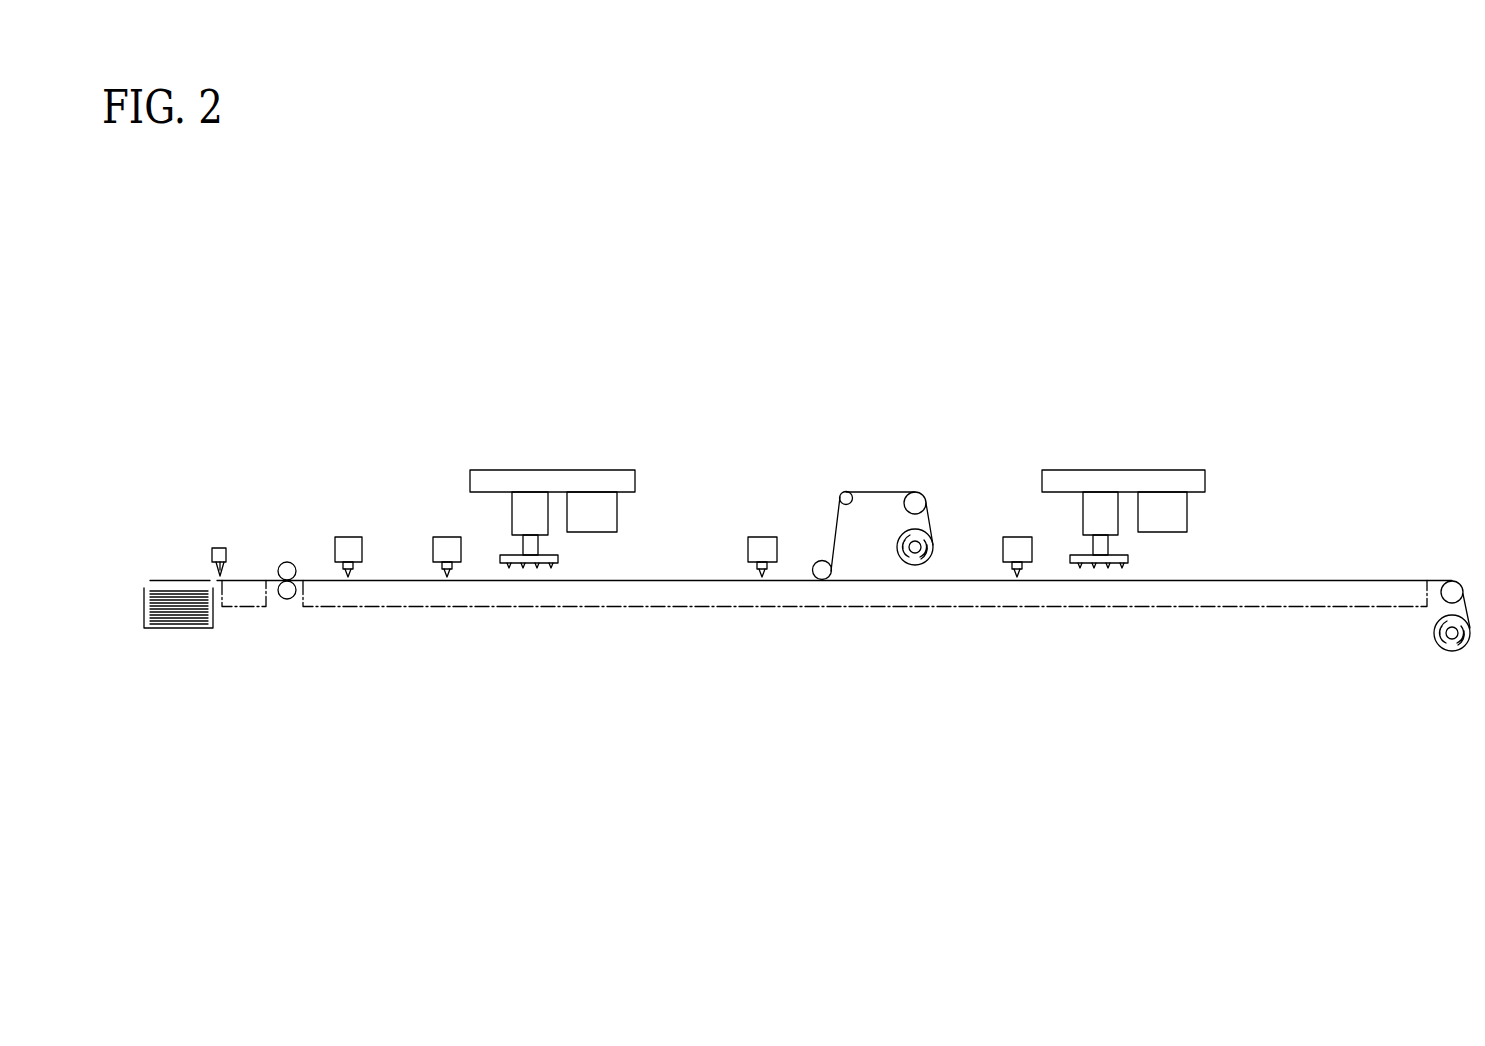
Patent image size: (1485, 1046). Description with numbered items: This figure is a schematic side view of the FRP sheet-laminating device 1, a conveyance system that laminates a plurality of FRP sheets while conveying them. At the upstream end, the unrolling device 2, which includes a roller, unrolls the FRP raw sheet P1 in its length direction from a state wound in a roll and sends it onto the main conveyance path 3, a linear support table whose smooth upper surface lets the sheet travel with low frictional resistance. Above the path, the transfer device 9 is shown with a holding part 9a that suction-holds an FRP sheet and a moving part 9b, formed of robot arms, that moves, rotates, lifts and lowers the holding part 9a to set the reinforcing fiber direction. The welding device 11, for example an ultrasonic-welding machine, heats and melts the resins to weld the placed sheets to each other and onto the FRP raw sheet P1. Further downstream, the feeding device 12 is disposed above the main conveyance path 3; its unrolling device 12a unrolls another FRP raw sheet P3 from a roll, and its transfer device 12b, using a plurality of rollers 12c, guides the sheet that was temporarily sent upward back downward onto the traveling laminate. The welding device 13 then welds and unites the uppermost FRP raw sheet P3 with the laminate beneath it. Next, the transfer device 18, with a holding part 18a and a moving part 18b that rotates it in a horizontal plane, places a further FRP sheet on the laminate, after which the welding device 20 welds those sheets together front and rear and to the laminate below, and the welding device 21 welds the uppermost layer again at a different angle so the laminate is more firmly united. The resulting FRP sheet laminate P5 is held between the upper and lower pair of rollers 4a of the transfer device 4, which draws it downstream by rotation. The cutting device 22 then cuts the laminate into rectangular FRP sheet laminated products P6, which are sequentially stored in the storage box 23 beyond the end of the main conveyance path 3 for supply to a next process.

The FRP sheet-laminating device 1 is at (1272, 442).
The unrolling device 2 is at (1452, 585).
The main conveyance path 3 is at (662, 608).
The transfer device 4 is at (276, 552).
The pair of rollers 4a is at (280, 567).
The transfer device 9 is at (1159, 533).
The holding part 9a is at (1072, 565).
The moving part 9b is at (1110, 520).
The welding device 11 is at (1023, 569).
The feeding device 12 is at (880, 520).
The unrolling device 12a is at (922, 546).
The transfer device 12b is at (815, 507).
The rollers 12c is at (846, 491).
The welding device 13 is at (756, 569).
The transfer device 18 is at (589, 525).
The holding part 18a is at (503, 564).
The moving part 18b is at (542, 512).
The welding device 20 is at (446, 570).
The welding device 21 is at (355, 567).
The cutting device 22 is at (216, 544).
The storage box 23 is at (178, 630).
The FRP raw sheet P1 is at (1342, 578).
The FRP raw sheet P3 is at (838, 533).
The FRP sheet laminate P5 is at (313, 579).
The FRP sheet laminated product P6 is at (143, 592).